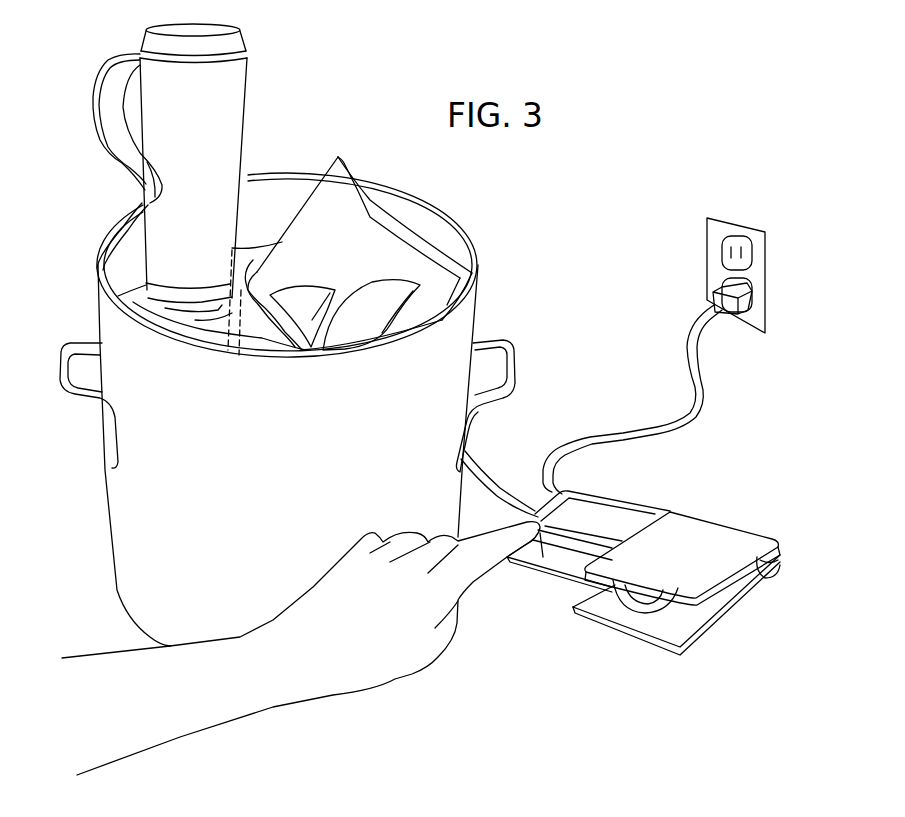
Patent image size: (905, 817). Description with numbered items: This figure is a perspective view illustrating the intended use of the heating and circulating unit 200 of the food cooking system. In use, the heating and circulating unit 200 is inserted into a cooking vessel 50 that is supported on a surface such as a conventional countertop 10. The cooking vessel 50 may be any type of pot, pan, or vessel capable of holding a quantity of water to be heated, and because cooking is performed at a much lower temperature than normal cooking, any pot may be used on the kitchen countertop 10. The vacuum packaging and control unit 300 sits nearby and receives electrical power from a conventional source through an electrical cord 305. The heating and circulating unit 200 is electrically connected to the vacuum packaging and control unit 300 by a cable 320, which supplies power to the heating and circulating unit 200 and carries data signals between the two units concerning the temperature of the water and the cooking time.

The countertop 10 is at (531, 623).
The cooking vessel 50 is at (291, 450).
The heating and circulating unit 200 is at (240, 120).
The vacuum packaging and control unit 300 is at (705, 537).
The electrical cord 305 is at (685, 336).
The cable 320 is at (478, 467).